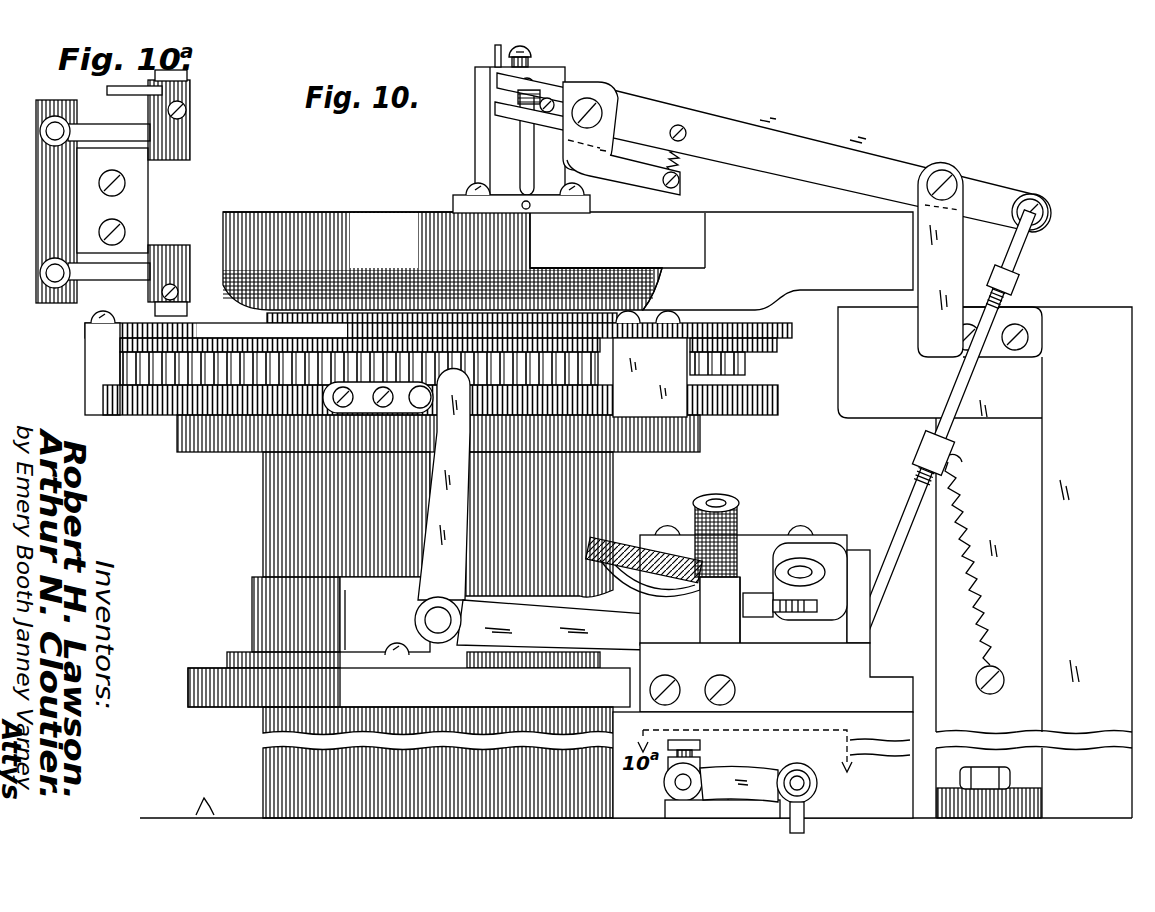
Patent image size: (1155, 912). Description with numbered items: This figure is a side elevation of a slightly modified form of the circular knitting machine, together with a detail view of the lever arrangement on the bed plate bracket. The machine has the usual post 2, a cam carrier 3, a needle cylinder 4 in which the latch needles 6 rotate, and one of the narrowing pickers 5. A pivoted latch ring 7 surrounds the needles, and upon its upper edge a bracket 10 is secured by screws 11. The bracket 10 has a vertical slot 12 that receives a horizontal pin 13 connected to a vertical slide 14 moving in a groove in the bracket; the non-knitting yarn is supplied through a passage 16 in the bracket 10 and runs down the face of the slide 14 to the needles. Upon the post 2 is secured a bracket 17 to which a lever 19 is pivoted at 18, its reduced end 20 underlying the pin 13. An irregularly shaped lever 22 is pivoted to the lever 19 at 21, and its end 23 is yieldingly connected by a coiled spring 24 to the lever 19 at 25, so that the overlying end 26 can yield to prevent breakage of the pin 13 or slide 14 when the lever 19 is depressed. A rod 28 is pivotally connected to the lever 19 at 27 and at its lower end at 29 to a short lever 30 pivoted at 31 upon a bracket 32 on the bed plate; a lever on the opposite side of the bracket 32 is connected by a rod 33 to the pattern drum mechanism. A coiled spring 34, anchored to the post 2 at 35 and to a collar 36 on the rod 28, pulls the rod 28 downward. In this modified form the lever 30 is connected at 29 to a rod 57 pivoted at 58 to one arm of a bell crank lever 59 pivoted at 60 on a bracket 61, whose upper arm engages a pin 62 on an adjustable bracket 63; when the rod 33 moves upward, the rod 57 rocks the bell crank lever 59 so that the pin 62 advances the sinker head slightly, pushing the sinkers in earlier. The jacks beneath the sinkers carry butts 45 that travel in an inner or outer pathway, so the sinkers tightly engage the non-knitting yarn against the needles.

In FIG. 10, the post 2 is at (1035, 452).
In FIG. 10, the cam carrier 3 is at (256, 613).
In FIG. 10, the needle cylinder 4 is at (275, 492).
In FIG. 10, the narrowing picker 5 is at (628, 545).
In FIG. 10, the needles 6 is at (252, 320).
In FIG. 10, the latch ring 7 is at (372, 210).
In FIG. 10, the bracket 10 is at (457, 200).
In FIG. 10, the screws 11 is at (470, 186).
In FIG. 10, the vertical slot 12 is at (526, 155).
In FIG. 10, the horizontal pin 13 is at (571, 92).
In FIG. 10, the vertical slide 14 is at (494, 50).
In FIG. 10, the passage 16 is at (545, 222).
In FIG. 10, the bracket 17 is at (1002, 325).
In FIG. 10, the pivot 18 is at (940, 180).
In FIG. 10, the lever 19 is at (822, 148).
In FIG. 10, the reduced end 20 is at (500, 110).
In FIG. 10, the pivot 21 is at (605, 117).
In FIG. 10, the irregularly shaped lever 22 is at (640, 172).
In FIG. 10, the end of lever 23 is at (679, 185).
In FIG. 10, the coiled spring 24 is at (680, 160).
In FIG. 10, the spring connection 25 is at (681, 126).
In FIG. 10, the overlying end 26 is at (540, 80).
In FIG. 10, the pivot 27 is at (1031, 194).
In FIG. 10A, the rod 28 is at (187, 110).
In FIG. 10, the rod 28 is at (962, 392).
In FIG. 10A, the pivot 29 is at (178, 160).
In FIG. 10, the pivot 29 is at (818, 784).
In FIG. 10A, the short lever 30 is at (95, 136).
In FIG. 10, the short lever 30 is at (728, 775).
In FIG. 10A, the pivot 31 is at (52, 116).
In FIG. 10, the pivot 31 is at (664, 786).
In FIG. 10A, the bracket 32 is at (138, 204).
In FIG. 10, the bracket 32 is at (680, 810).
In FIG. 10A, the rod 33 is at (161, 293).
In FIG. 10, the rod 33 is at (806, 812).
In FIG. 10, the coiled spring 34 is at (966, 530).
In FIG. 10, the spring connection 35 is at (994, 675).
In FIG. 10, the collar 36 is at (916, 454).
In FIG. 10, the butt 45 is at (325, 352).
In FIG. 10, the rod 57 is at (708, 672).
In FIG. 10, the pivot 58 is at (648, 633).
In FIG. 10, the bell crank lever 59 is at (430, 586).
In FIG. 10, the pivot 60 is at (424, 617).
In FIG. 10, the bracket 61 is at (392, 656).
In FIG. 10, the pin 62 is at (418, 400).
In FIG. 10, the adjustable bracket 63 is at (360, 407).